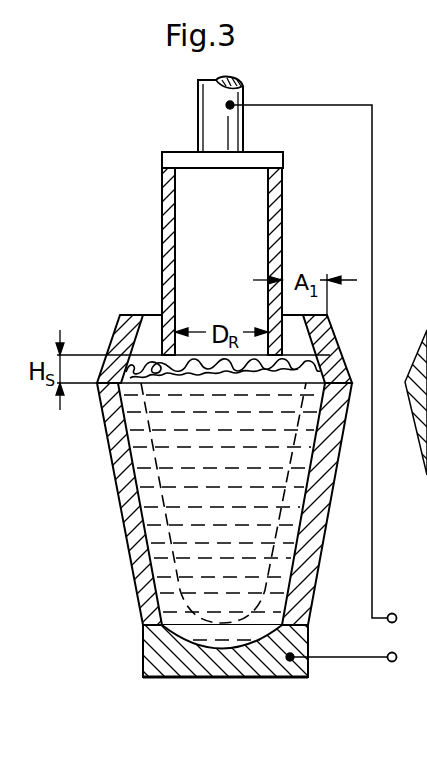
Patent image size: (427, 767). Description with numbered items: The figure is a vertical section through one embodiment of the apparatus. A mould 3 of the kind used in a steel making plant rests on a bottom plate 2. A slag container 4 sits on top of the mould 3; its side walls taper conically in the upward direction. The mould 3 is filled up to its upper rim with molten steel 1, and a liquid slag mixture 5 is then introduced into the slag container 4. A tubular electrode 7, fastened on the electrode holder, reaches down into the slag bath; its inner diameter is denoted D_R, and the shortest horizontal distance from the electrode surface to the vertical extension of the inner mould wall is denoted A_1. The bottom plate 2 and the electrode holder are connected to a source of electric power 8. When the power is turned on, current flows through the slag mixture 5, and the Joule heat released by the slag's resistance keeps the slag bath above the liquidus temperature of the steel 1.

The molten steel 1 is at (195, 557).
The bottom plate 2 is at (186, 666).
The mould 3 is at (128, 493).
The slag container 4 is at (116, 342).
The liquid slag mixture 5 is at (138, 370).
The tubular electrode 7 is at (168, 224).
The source of electric power 8 is at (313, 381).